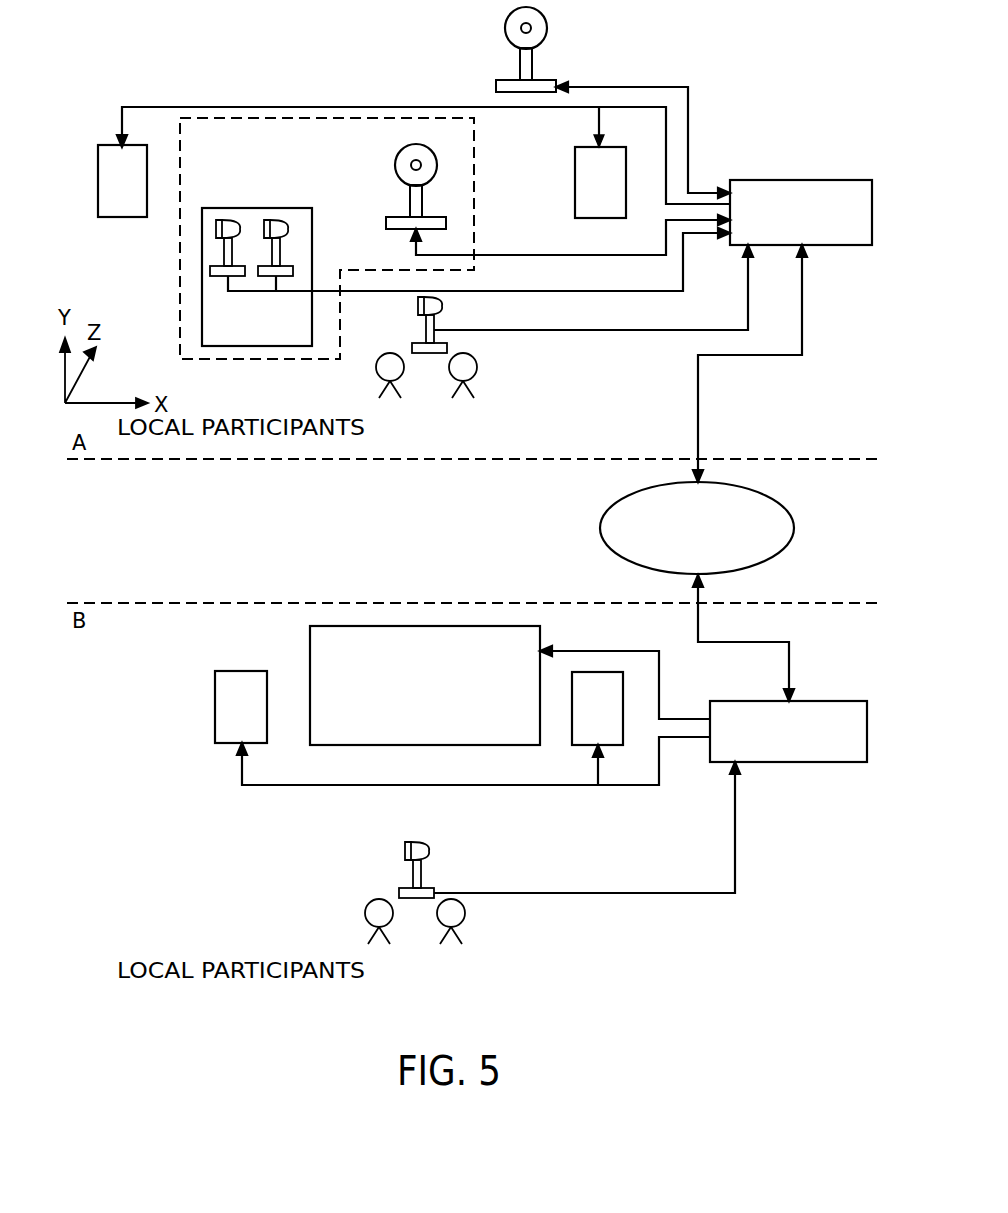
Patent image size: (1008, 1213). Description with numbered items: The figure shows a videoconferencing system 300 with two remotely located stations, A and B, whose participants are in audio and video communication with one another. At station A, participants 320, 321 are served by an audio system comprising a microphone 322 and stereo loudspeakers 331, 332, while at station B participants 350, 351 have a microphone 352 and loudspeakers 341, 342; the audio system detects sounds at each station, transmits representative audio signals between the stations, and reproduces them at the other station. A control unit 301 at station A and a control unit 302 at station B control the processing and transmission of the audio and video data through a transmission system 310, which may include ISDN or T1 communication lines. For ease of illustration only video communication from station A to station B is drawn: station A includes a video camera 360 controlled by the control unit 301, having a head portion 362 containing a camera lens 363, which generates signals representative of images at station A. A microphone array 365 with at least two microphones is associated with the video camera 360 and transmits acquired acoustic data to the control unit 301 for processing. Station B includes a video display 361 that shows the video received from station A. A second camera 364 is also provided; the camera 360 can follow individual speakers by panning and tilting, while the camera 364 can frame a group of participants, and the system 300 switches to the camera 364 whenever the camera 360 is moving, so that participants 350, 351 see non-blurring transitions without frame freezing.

The videoconferencing system 300 is at (86, 101).
The control unit 301 is at (795, 178).
The control unit 302 is at (795, 766).
The transmission system 310 is at (600, 528).
The participant 320 is at (377, 374).
The participant 321 is at (476, 374).
The microphone 322 is at (442, 316).
The loudspeaker 331 is at (98, 178).
The loudspeaker 332 is at (575, 180).
The loudspeaker 341 is at (215, 706).
The loudspeaker 342 is at (582, 745).
The participant 350 is at (366, 922).
The participant 351 is at (465, 922).
The microphone 352 is at (430, 858).
The video camera 360 is at (410, 200).
The video display 361 is at (310, 652).
The head portion 362 is at (395, 163).
The camera lens 363 is at (423, 165).
The second camera 364 is at (519, 65).
The microphone array 365 is at (233, 208).